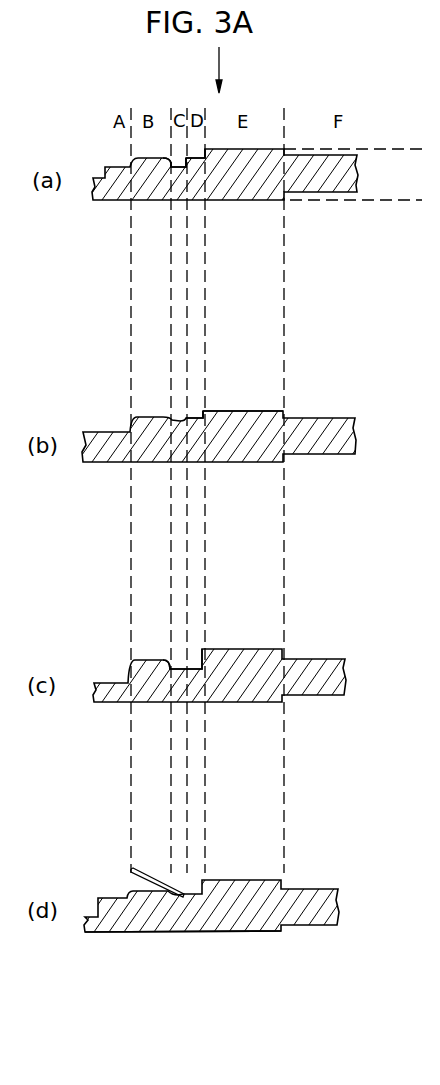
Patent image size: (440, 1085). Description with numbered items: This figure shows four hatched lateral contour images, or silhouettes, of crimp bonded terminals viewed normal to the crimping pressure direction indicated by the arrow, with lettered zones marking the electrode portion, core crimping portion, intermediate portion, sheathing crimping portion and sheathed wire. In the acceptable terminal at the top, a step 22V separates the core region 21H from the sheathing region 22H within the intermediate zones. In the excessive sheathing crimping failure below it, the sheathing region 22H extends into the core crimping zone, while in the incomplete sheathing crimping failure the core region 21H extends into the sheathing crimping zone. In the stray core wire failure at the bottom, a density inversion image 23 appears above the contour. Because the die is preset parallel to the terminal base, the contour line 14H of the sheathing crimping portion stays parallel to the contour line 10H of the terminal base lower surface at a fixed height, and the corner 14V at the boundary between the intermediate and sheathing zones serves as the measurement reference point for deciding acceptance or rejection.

The contour line of the terminal base lower surface 10H is at (363, 202).
The contour line of the sheathing crimping portion 14H is at (383, 143).
The corner 14V is at (205, 412).
The core region 21H is at (170, 160).
The sheathing region 22H is at (199, 152).
The step 22V is at (188, 161).
The density inversion image 23 is at (150, 873).